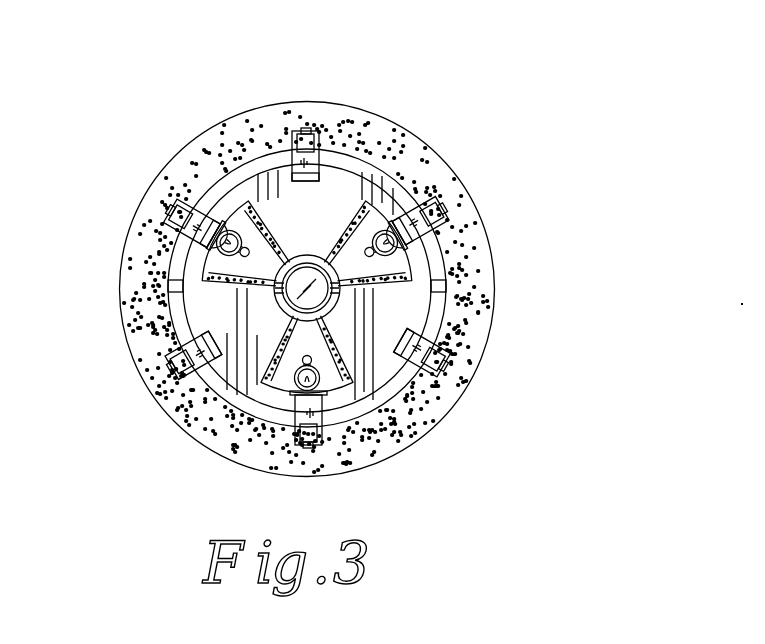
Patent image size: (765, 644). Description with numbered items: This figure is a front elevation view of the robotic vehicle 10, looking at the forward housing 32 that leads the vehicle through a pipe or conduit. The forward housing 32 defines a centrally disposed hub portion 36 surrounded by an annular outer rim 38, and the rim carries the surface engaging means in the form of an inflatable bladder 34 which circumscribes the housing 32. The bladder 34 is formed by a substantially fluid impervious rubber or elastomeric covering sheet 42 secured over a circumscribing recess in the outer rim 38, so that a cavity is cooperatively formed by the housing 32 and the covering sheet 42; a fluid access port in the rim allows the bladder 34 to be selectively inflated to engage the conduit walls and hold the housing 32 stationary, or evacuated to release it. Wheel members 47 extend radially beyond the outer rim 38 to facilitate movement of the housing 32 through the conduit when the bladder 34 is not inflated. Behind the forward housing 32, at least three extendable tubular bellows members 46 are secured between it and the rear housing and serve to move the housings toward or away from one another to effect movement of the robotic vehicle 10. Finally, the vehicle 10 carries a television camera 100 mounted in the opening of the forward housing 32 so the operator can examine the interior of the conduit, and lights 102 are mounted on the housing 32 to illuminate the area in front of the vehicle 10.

The robotic vehicle 10 is at (408, 76).
The forward housing 32 is at (328, 234).
The inflatable bladder 34 is at (180, 147).
The hub portion 36 is at (338, 308).
The annular outer rim 38 is at (383, 178).
The covering sheet 42 is at (143, 211).
The tubular bellows members 46 is at (218, 258).
The wheel members 47 is at (309, 128).
The television camera 100 is at (285, 309).
The lights 102 is at (231, 231).